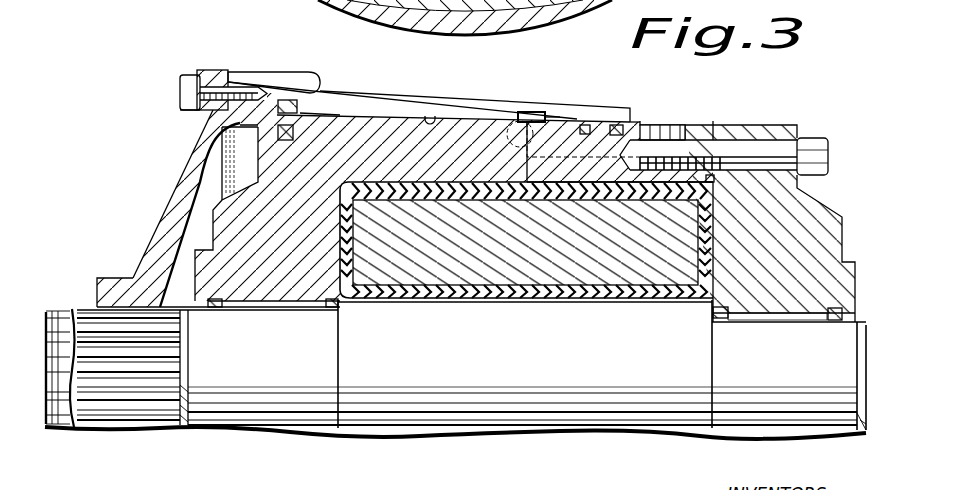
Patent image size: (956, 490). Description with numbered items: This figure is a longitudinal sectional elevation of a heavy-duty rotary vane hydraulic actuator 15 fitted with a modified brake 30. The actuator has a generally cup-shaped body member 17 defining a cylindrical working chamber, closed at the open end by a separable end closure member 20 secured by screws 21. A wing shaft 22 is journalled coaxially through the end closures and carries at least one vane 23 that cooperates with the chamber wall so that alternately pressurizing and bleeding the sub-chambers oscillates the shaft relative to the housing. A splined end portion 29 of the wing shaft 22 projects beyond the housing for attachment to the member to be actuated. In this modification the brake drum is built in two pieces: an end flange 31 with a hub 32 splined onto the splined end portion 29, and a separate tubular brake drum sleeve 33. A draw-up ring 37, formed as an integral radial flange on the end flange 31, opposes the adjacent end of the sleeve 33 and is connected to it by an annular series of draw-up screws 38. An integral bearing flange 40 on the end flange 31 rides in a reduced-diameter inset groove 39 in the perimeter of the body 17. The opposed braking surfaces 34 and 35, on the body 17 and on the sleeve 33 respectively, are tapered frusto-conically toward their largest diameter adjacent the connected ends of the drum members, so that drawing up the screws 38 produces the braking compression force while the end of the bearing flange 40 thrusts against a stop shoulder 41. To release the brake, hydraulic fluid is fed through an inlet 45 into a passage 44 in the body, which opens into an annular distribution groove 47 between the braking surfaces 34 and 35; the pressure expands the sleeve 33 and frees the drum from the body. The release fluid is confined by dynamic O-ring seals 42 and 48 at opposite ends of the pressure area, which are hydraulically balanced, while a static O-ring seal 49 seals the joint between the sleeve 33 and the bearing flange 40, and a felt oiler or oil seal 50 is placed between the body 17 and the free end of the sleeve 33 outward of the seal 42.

The rotary hydraulic actuator 15 is at (681, 110).
The body member 17 is at (410, 128).
The end closure member 20 is at (817, 220).
The screws 21 is at (808, 143).
The wing shaft 22 is at (563, 357).
The vane 23 is at (647, 272).
The splined end portion 29 is at (147, 408).
The brake 30 is at (193, 62).
The end flange 31 is at (177, 193).
The hub 32 is at (115, 283).
The brake drum sleeve 33 is at (377, 95).
The braking surface 34 is at (463, 114).
The braking surface 35 is at (435, 122).
The draw-up ring 37 is at (207, 68).
The draw-up screws 38 is at (190, 92).
The inset groove 39 is at (303, 98).
The bearing flange 40 is at (263, 110).
The stop shoulder 41 is at (331, 115).
The dynamic O-ring seal 42 is at (586, 124).
The passage 44 is at (529, 111).
The inlet 45 is at (615, 124).
The annular distribution groove 47 is at (550, 118).
The dynamic O-ring seal 48 is at (233, 140).
The static O-ring seal 49 is at (287, 120).
The felt oiler or oil seal 50 is at (656, 126).